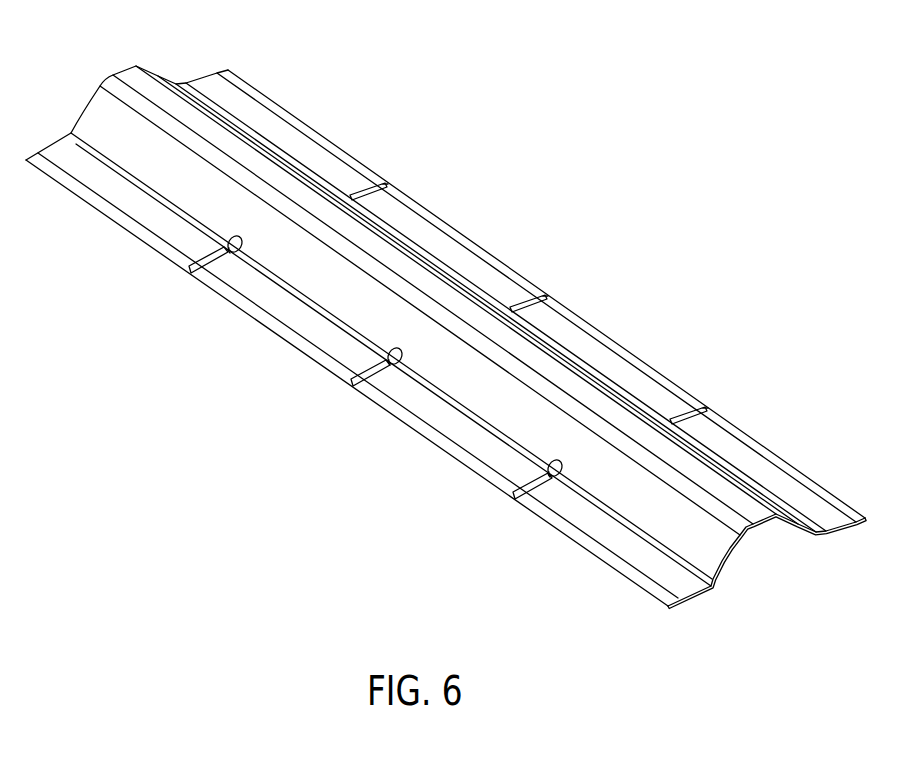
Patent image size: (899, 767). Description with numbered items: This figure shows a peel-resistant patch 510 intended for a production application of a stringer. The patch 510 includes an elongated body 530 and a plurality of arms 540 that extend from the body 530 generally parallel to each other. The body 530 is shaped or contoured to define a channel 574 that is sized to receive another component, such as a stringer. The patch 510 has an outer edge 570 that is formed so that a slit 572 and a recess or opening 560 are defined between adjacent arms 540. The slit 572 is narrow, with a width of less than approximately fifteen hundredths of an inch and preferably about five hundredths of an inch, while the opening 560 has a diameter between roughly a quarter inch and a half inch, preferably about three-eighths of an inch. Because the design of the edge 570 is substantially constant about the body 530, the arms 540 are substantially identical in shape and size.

The patch 510 is at (672, 665).
The body 530 is at (549, 422).
The arms 540 is at (320, 114).
The opening 560 is at (250, 240).
The outer edge 570 is at (243, 78).
The slit 572 is at (188, 251).
The channel 574 is at (760, 558).